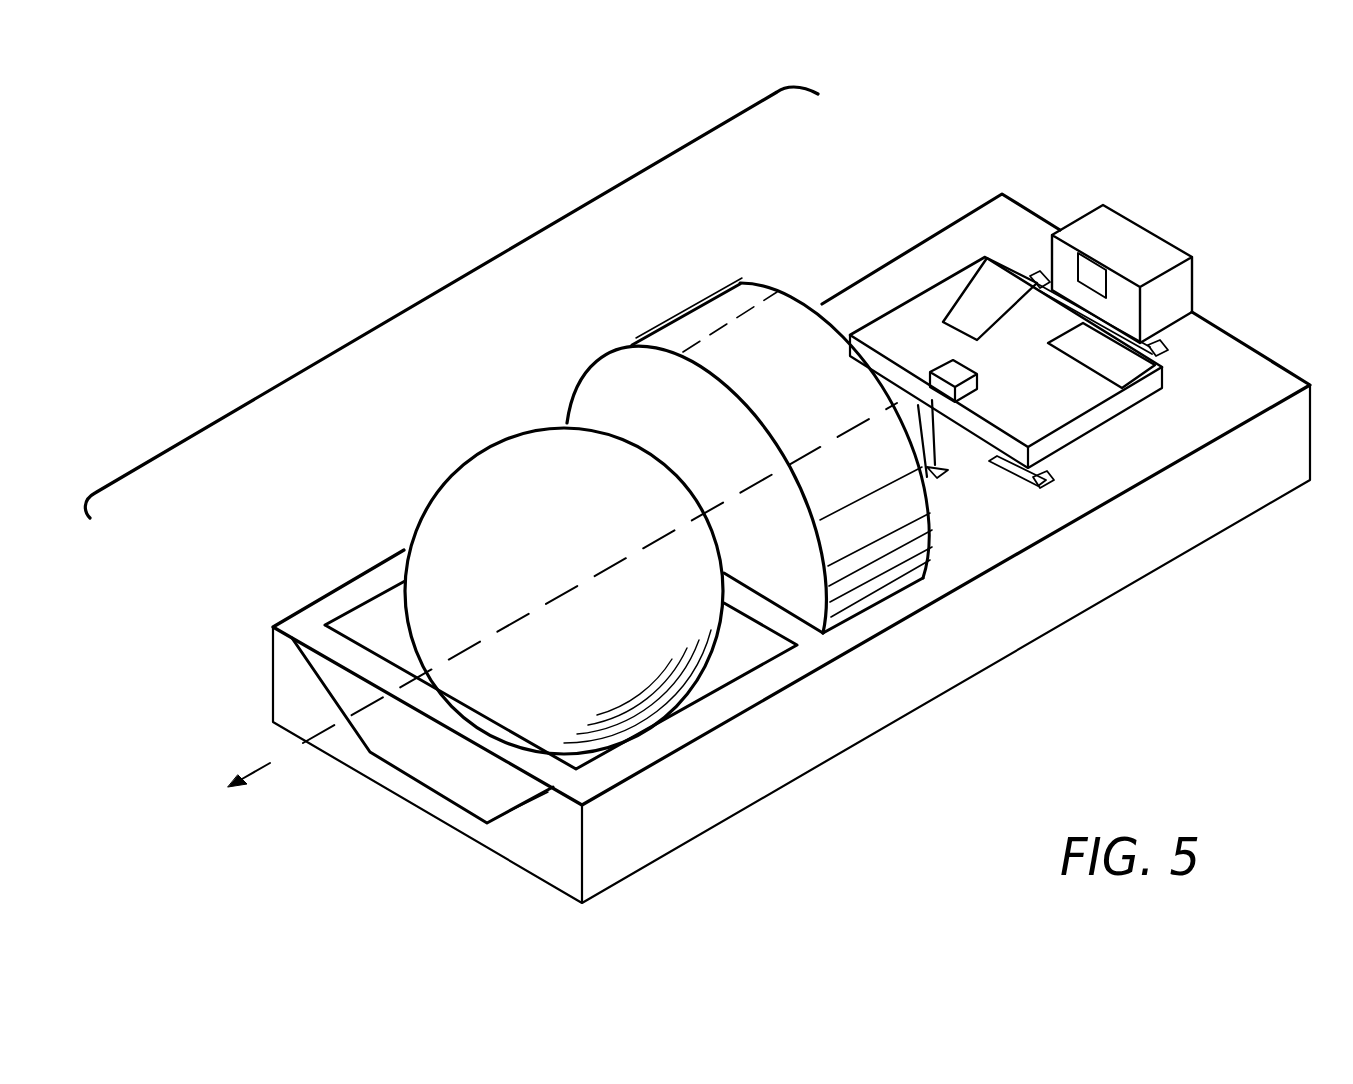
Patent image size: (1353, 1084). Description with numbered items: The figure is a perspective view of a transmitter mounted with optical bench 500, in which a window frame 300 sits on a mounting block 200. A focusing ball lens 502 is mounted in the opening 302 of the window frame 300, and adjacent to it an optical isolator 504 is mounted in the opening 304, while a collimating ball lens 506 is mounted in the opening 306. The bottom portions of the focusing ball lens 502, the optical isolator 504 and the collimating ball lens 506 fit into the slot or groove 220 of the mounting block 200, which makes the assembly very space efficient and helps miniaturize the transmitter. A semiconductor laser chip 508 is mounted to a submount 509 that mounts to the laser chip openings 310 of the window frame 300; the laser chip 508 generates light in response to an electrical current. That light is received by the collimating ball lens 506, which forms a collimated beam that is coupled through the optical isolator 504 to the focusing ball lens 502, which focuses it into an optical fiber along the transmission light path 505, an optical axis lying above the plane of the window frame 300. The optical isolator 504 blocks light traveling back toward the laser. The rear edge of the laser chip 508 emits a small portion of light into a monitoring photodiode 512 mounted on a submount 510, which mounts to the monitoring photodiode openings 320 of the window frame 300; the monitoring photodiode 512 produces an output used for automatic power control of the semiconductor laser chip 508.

The mounting block 200 is at (805, 745).
The slot or groove 220 is at (470, 760).
The window frame 300 is at (973, 236).
The opening 302 is at (612, 757).
The opening 304 is at (897, 602).
The opening 306 is at (932, 478).
The laser chip openings 310 is at (1030, 486).
The monitoring photodiode openings 320 is at (1163, 352).
The transmitter mounted with optical bench 500 is at (441, 296).
The focusing ball lens 502 is at (462, 498).
The optical isolator 504 is at (660, 330).
The transmission light path 505 is at (248, 778).
The collimating ball lens 506 is at (913, 410).
The semiconductor laser chip 508 is at (957, 380).
The submount 509 is at (1166, 398).
The submount 510 is at (1197, 260).
The monitoring photodiode 512 is at (1088, 280).